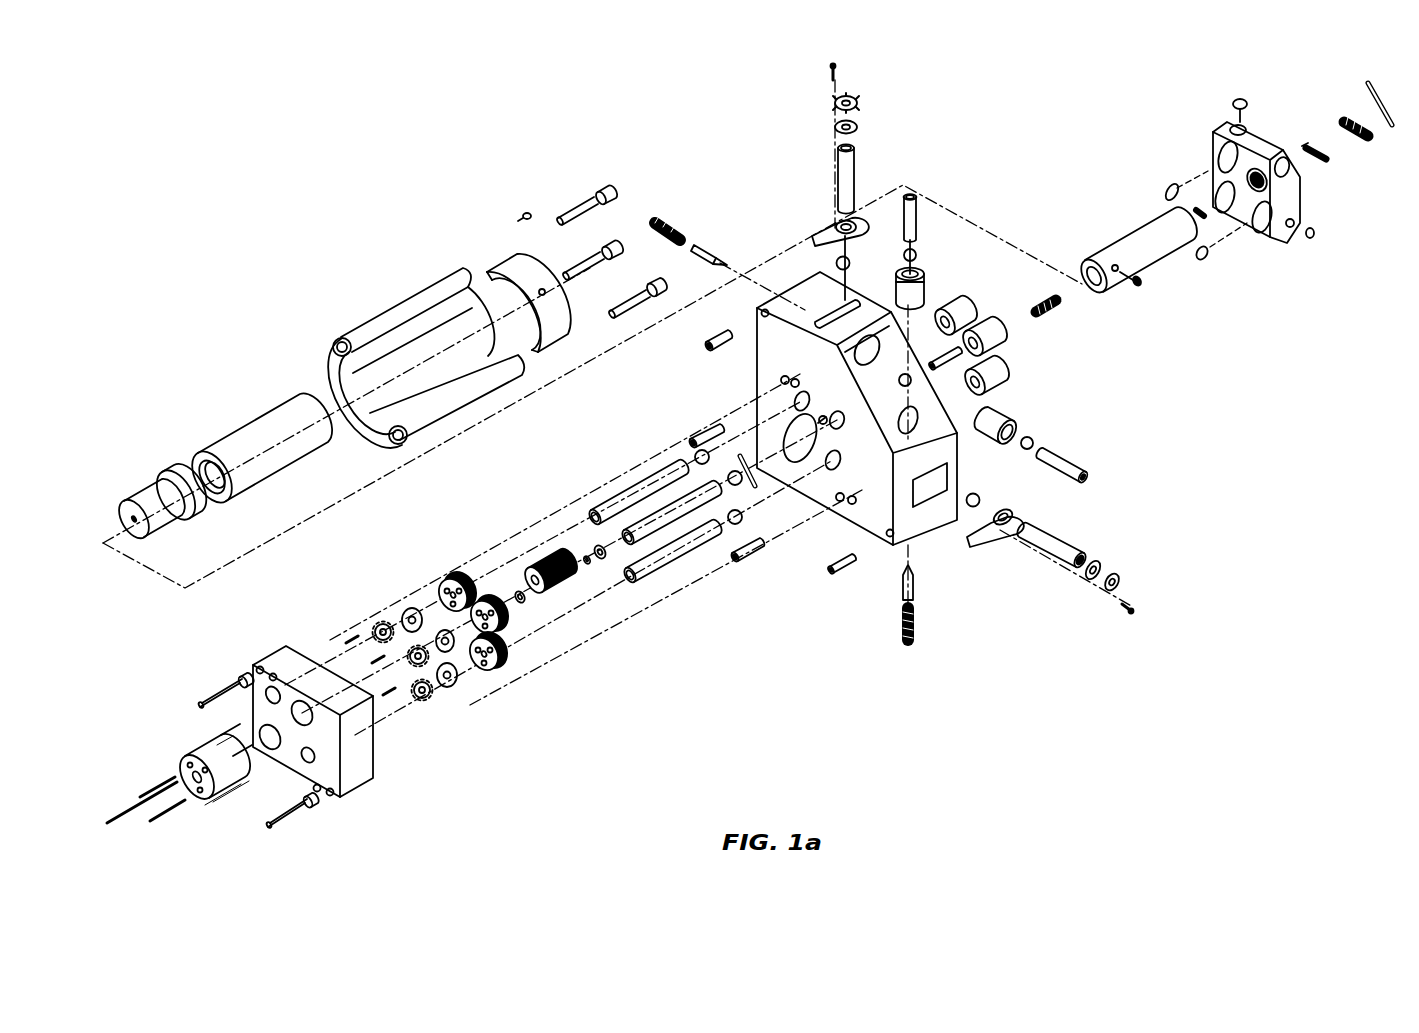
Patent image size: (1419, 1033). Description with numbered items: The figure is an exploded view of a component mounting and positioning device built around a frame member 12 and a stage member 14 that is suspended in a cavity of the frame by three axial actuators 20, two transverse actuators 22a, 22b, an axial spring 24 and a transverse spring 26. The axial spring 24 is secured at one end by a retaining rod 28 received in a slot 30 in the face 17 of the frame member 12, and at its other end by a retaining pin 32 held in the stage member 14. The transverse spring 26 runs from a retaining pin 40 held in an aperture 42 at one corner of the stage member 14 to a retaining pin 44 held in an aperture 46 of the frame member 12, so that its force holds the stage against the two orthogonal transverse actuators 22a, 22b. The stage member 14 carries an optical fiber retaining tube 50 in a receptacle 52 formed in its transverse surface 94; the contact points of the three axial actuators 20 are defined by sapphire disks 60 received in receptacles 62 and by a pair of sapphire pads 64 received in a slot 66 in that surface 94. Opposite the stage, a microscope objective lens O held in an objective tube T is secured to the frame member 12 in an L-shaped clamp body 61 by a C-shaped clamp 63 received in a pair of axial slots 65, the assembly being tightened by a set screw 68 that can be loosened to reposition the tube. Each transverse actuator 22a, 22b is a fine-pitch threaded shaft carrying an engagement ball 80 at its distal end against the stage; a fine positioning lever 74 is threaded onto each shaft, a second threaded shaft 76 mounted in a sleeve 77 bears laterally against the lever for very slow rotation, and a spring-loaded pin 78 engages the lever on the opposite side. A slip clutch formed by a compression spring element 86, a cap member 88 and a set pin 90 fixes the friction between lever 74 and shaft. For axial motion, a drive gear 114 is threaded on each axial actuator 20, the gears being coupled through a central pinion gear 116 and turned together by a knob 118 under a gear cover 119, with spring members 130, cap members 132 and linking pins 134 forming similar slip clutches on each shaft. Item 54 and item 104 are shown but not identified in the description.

The frame member 12 is at (932, 513).
The stage member 14 is at (1270, 240).
The face 17 is at (784, 342).
The axial actuators 20 is at (670, 490).
The transverse actuator 22a is at (853, 180).
The transverse actuator 22b is at (1050, 540).
The axial spring 24 is at (1054, 312).
The transverse spring 26 is at (1362, 138).
The retaining rod 28 is at (761, 455).
The slot 30 is at (823, 416).
The retaining pin 32 is at (1372, 86).
The retaining pin 40 is at (1318, 140).
The aperture 42 is at (1295, 170).
The retaining pin 44 is at (977, 325).
The aperture 46 is at (899, 381).
The optical fiber retaining tube 50 is at (1128, 235).
The receptacle 52 is at (1202, 180).
The arrow 54 is at (1303, 205).
The sapphire disks 60 is at (958, 440).
The L-shaped clamp body 61 is at (385, 312).
The receptacles 62 is at (1247, 133).
The C-shaped clamp 63 is at (565, 290).
The sapphire pads 64 is at (1217, 256).
The axial slots 65 is at (335, 372).
The slot 66 is at (1250, 175).
The set screw 68 is at (530, 210).
The fine positioning lever 74 is at (812, 236).
The second threaded shaft 76 is at (918, 222).
The sleeve 77 is at (925, 290).
The spring-loaded pin 78 is at (688, 238).
The engagement ball 80 is at (850, 262).
The compression spring element 86 is at (858, 127).
The cap member 88 is at (862, 100).
The set pin 90 is at (828, 75).
The transverse surface 94 is at (1213, 132).
The bores 104 is at (803, 393).
The drive gear 114 is at (450, 575).
The central pinion gear 116 is at (540, 565).
The knob 118 is at (215, 792).
The gear cover 119 is at (325, 800).
The spring members 130 is at (405, 612).
The cap members 132 is at (375, 626).
The linking pins 134 is at (346, 643).
The objective tube T is at (245, 432).
The microscope objective lens O is at (130, 505).